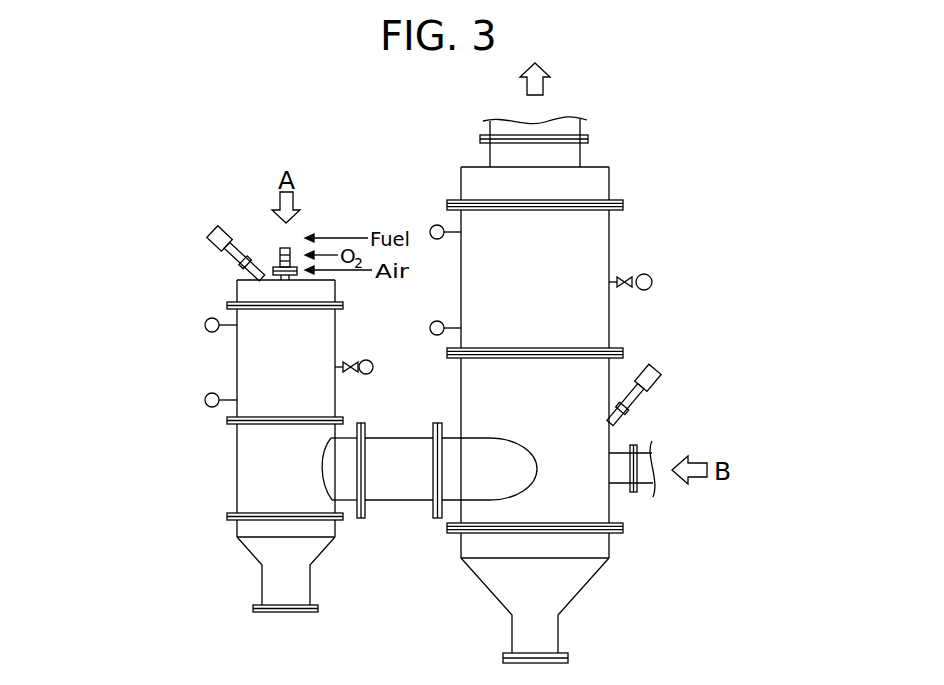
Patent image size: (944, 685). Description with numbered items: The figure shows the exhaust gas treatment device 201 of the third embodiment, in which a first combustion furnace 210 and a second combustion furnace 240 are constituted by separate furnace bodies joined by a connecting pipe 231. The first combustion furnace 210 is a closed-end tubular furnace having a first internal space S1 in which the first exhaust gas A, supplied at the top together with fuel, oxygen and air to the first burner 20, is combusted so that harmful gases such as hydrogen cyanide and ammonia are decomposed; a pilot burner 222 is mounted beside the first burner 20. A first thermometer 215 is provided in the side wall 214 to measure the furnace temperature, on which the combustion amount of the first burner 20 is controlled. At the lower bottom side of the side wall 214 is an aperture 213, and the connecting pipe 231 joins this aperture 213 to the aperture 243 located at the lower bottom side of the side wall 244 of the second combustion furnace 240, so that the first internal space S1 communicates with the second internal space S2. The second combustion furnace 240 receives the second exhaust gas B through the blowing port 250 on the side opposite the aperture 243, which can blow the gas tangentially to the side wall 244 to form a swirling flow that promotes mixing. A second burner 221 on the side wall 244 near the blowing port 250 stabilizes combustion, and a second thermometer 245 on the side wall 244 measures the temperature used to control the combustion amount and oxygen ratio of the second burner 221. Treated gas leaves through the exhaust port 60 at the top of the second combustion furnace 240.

The exhaust gas treatment device 201 is at (692, 78).
The first combustion furnace 210 is at (221, 467).
The aperture 213 is at (336, 491).
The side wall 214 is at (237, 364).
The first thermometer 215 is at (205, 325).
The first burner 20 is at (271, 266).
The pilot burner 222 is at (213, 258).
The connecting pipe 231 is at (402, 503).
The second combustion furnace 240 is at (620, 243).
The aperture 243 is at (502, 484).
The side wall 244 is at (609, 318).
The second thermometer 245 is at (434, 225).
The blowing port (second blowing port) 250 is at (610, 487).
The second burner 221 is at (656, 385).
The exhaust port 60 is at (567, 155).
The first internal space S1 is at (268, 500).
The second internal space S2 is at (573, 503).